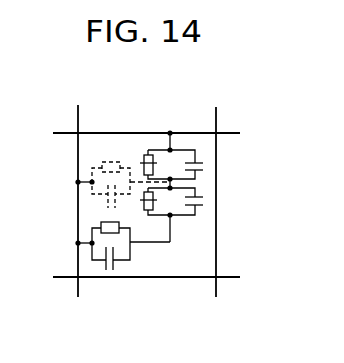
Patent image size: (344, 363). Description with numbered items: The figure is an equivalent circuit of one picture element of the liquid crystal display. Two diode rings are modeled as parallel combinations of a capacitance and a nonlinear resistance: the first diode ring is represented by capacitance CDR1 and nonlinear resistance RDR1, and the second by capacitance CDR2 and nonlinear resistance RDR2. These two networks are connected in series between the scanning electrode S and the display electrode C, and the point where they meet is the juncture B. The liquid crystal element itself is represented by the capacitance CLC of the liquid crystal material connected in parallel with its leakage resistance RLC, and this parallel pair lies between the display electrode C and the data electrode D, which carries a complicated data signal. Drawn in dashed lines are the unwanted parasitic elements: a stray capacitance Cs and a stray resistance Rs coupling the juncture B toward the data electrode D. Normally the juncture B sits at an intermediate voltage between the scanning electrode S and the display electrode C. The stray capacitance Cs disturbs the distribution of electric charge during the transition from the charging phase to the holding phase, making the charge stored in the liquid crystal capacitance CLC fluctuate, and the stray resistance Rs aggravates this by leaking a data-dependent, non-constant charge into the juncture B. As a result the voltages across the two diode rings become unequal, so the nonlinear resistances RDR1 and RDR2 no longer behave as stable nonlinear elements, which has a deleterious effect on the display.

The data electrode D is at (77, 118).
The scanning electrode S is at (65, 134).
The stray resistance Rs is at (110, 161).
The stray capacitance Cs is at (107, 210).
The nonlinear resistance RDR1 is at (147, 155).
The capacitance CDR1 is at (202, 162).
The nonlinear resistance RDR2 is at (143, 215).
The capacitance CDR2 is at (202, 202).
The juncture B is at (173, 183).
The display electrode C is at (173, 220).
The leakage resistance RLC is at (100, 238).
The capacitance of liquid crystal material CLC is at (108, 271).